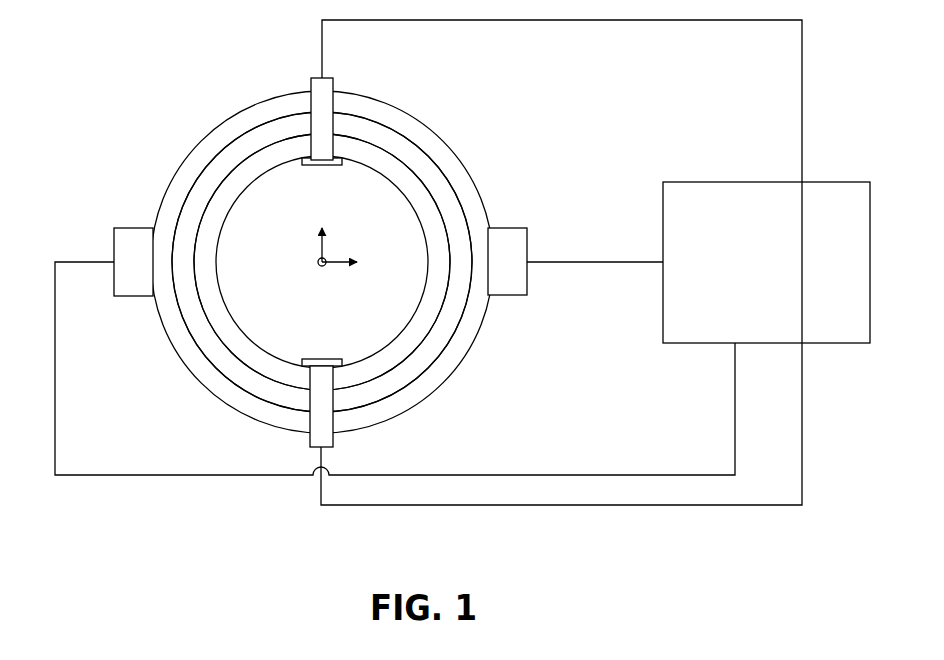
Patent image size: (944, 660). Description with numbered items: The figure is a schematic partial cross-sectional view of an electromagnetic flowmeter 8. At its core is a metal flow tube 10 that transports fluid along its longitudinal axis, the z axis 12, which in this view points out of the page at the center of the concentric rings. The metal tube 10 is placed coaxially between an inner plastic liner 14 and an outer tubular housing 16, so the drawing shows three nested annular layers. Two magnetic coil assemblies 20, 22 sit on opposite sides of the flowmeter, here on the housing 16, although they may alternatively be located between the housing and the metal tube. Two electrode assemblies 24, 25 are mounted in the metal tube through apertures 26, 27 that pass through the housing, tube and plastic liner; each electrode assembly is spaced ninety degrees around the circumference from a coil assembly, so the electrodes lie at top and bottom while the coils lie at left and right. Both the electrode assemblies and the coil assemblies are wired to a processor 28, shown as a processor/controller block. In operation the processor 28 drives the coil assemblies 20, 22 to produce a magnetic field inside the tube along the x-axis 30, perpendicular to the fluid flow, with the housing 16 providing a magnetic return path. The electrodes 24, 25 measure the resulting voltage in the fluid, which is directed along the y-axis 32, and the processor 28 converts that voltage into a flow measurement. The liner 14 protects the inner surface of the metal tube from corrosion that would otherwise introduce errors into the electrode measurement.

The electromagnetic flowmeter 8 is at (180, 100).
The metal flow tube 10 is at (417, 163).
The z axis 12 is at (316, 266).
The plastic liner 14 is at (363, 155).
The tubular housing 16 is at (453, 172).
The magnetic coil assembly 20 is at (137, 228).
The magnetic coil assembly 22 is at (512, 228).
The electrode assembly 24 is at (333, 440).
The electrode assembly 25 is at (320, 77).
The aperture 26 is at (297, 438).
The aperture 27 is at (343, 82).
The processor 28 is at (720, 182).
The x-axis 30 is at (337, 265).
The y-axis 32 is at (320, 243).